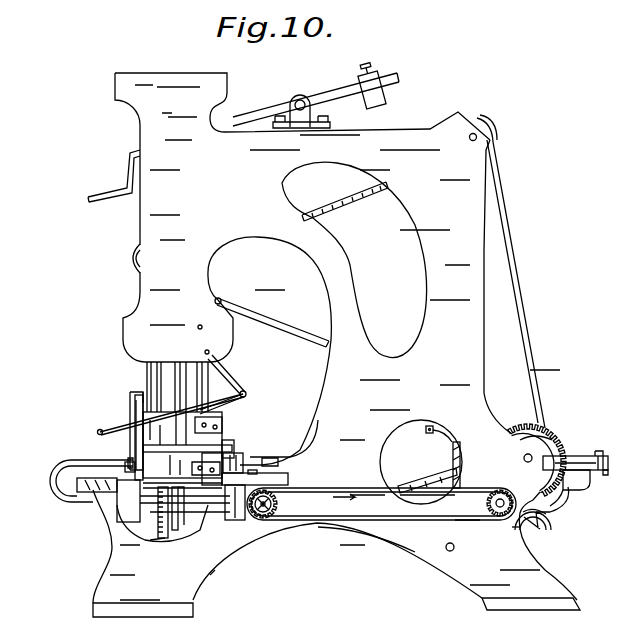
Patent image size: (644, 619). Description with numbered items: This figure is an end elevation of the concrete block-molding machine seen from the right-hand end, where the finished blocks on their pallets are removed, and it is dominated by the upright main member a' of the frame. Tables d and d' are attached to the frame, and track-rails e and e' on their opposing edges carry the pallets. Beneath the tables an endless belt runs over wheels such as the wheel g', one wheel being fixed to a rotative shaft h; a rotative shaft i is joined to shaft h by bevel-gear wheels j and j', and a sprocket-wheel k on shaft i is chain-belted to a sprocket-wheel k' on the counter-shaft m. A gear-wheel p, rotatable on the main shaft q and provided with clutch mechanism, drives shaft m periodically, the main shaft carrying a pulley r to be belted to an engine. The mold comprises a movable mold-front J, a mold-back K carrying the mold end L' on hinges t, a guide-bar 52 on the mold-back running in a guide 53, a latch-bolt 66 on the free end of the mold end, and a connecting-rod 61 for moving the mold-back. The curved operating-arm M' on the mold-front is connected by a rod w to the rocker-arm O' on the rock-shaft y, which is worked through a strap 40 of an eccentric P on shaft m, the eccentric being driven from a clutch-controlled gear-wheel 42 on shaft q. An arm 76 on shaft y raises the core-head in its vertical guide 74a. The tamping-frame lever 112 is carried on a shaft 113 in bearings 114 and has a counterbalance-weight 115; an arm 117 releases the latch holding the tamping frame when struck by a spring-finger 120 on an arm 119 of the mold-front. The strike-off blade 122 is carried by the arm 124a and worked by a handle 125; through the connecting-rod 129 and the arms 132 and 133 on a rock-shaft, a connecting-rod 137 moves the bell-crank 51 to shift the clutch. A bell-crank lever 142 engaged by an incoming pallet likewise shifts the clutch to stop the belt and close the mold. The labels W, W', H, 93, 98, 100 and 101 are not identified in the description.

The upright main member a' is at (336, 345).
The pivot pin 98 is at (460, 145).
The bar 101 is at (514, 242).
The shaft 113 is at (300, 99).
The bearings 114 is at (312, 110).
The counterbalance-weight 115 is at (390, 96).
The controlling handle or lever 112 is at (96, 195).
The boss 93 is at (129, 258).
The bar 100 is at (352, 200).
The connecting-rod 129 is at (265, 320).
The bar W' is at (175, 368).
The bar W is at (194, 374).
The arm 117 is at (147, 372).
The spring-finger 120 is at (155, 380).
The arm 119 is at (130, 394).
The mold end L' is at (117, 431).
The handle 125 is at (98, 430).
The arm 124a is at (237, 377).
The strike-off blade 122 is at (252, 403).
The mold-back K is at (222, 432).
The hinges t is at (219, 421).
The guide-bar 52 is at (240, 460).
The guide 53 is at (276, 458).
The connecting-rod 61 is at (295, 452).
The latch-bolt 66 is at (185, 486).
The mold-front J is at (134, 446).
The table d is at (81, 475).
The curved operating-arm M' is at (75, 499).
The table d' is at (269, 469).
The bevel-gear wheel j is at (244, 508).
The bevel-gear wheel j' is at (252, 534).
The track-rail e' is at (243, 532).
The rotative shaft i is at (297, 550).
The sprocket-wheel k is at (381, 504).
The sprocket-wheel k' is at (485, 503).
The rotative shaft h is at (158, 530).
The track-rail e is at (124, 512).
The wheel g' is at (162, 535).
The rod H is at (178, 525).
The vertical guide 74a is at (190, 533).
The bell-crank lever 142 is at (220, 543).
The arm 76 is at (378, 542).
The rocker-arm O' is at (440, 462).
The rods w is at (427, 475).
The arm 133 is at (452, 452).
The arm 132 is at (445, 436).
The main shaft q is at (524, 457).
The rock-shaft y is at (455, 549).
The counter-shaft m is at (506, 535).
The gear-wheel p is at (530, 424).
The gear-wheel 42 is at (552, 440).
The connecting-rod 137 is at (576, 460).
The bell-crank 51 is at (590, 487).
The pulley r is at (574, 500).
The eccentric P is at (538, 532).
The strap 40 is at (543, 513).